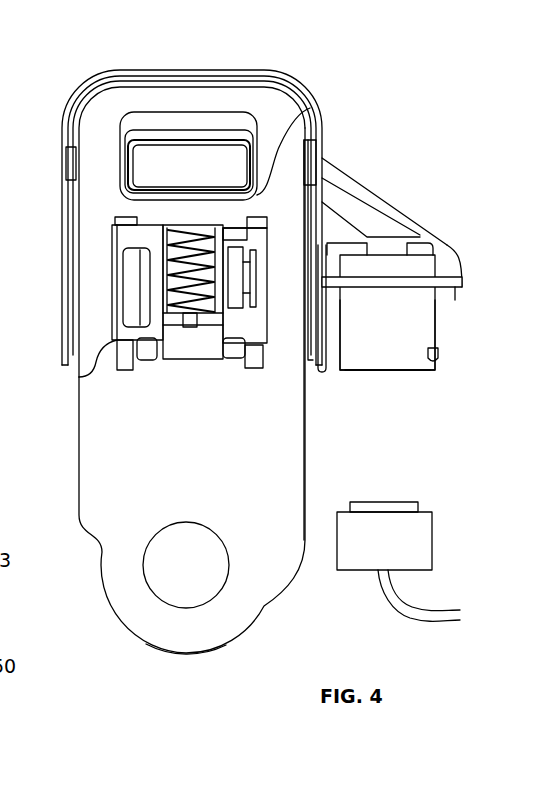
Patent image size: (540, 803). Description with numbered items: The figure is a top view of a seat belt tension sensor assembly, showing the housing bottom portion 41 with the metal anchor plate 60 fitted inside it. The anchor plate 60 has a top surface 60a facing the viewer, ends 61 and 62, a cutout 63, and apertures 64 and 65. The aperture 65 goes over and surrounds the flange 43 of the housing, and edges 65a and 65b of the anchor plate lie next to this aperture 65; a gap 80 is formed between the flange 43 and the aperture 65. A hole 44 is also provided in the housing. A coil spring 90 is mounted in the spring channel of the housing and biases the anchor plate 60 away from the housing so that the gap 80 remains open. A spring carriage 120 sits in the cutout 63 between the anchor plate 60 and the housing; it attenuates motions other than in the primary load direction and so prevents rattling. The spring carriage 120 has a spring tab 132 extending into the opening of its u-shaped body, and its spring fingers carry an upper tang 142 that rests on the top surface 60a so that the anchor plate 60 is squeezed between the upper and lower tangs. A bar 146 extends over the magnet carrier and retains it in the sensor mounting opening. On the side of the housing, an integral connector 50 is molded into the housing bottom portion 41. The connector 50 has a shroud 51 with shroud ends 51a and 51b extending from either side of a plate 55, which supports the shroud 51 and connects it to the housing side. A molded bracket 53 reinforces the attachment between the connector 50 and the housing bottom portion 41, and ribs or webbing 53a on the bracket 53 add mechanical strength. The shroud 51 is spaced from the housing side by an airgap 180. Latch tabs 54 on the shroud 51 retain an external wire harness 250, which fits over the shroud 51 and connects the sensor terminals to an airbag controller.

The housing bottom portion 41 is at (296, 90).
The flange 43 is at (197, 133).
The hole 44 is at (167, 160).
The integral connector 50 is at (437, 320).
The shroud 51 is at (410, 373).
The shroud end 51a is at (373, 373).
The shroud end 51b is at (442, 265).
The bracket 53 is at (407, 220).
The ribs or webbing 53a is at (332, 197).
The latch tabs 54 is at (438, 357).
The plate 55 is at (455, 288).
The anchor plate 60 is at (306, 453).
The top surface 60a is at (262, 435).
The end 61 is at (177, 660).
The end 62 is at (72, 102).
The cutout 63 is at (79, 380).
The aperture 64 is at (190, 575).
The aperture 65 is at (140, 120).
The edge 65a is at (237, 112).
The edge 65b is at (308, 114).
The gap 80 is at (220, 120).
The coil spring 90 is at (173, 237).
The spring carriage 120 is at (112, 242).
The spring tab 132 is at (195, 327).
The upper tang 142 is at (256, 368).
The bar 146 is at (248, 275).
The airgap 180 is at (333, 357).
The wire harness 250 is at (433, 542).